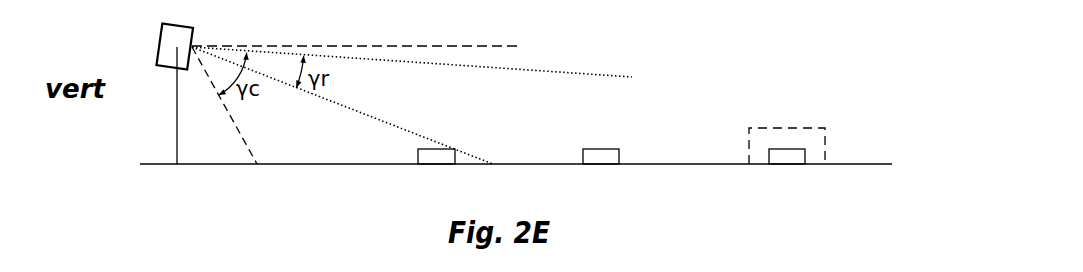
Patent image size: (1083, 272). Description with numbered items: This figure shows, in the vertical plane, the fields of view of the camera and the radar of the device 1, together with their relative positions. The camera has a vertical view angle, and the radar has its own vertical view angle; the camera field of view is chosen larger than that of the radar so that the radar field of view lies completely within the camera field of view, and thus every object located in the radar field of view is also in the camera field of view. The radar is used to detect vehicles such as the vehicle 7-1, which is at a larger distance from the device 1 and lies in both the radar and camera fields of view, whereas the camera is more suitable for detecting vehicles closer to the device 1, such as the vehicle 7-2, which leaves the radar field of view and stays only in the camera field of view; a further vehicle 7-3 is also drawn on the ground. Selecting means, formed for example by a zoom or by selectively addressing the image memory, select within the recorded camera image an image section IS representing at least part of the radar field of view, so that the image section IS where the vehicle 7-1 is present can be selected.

The device 1 is at (200, 25).
The vehicle 7-1 is at (787, 169).
The vehicle 7-2 is at (436, 169).
The object / obstacle 7-3 is at (601, 169).
The image section IS is at (828, 124).